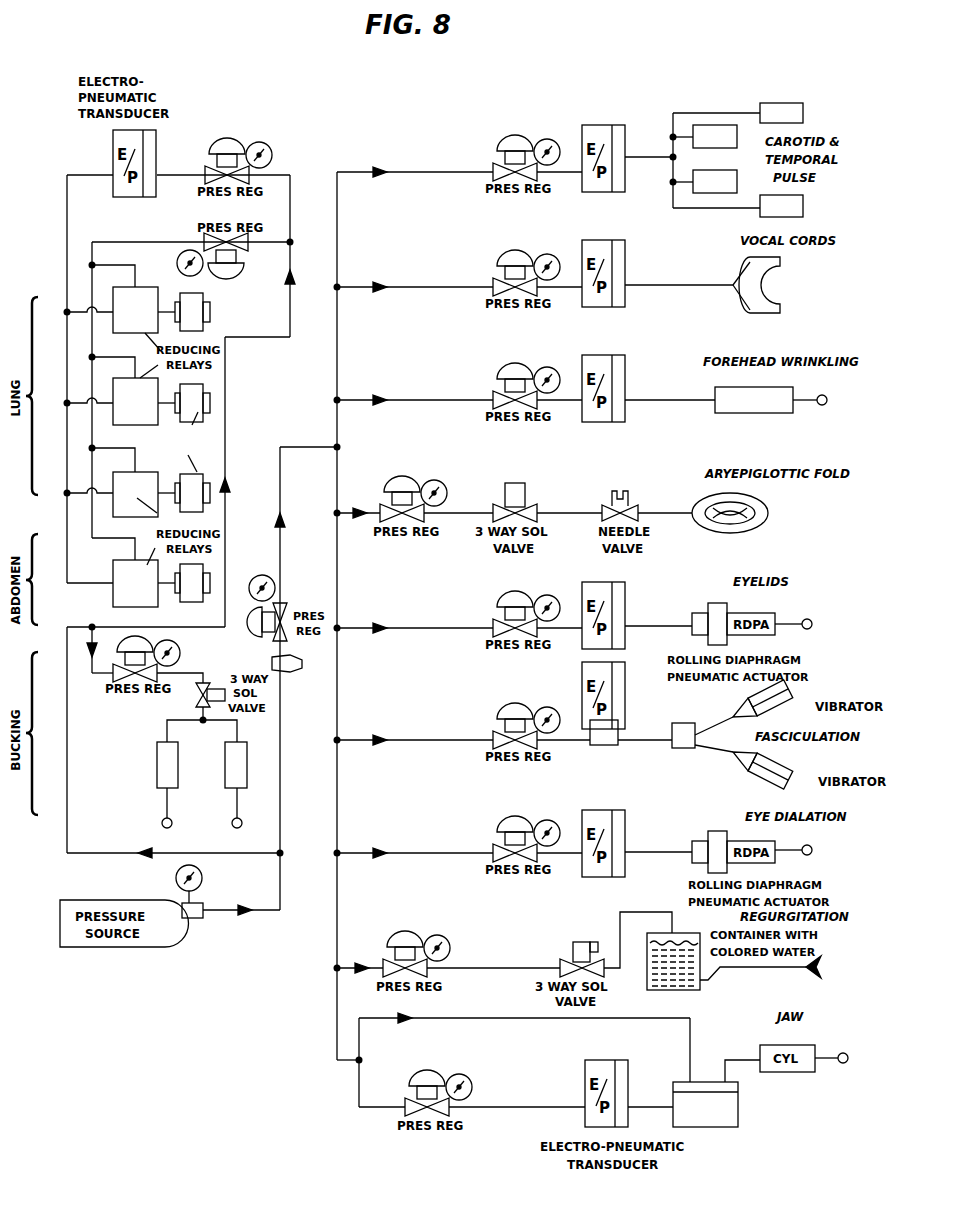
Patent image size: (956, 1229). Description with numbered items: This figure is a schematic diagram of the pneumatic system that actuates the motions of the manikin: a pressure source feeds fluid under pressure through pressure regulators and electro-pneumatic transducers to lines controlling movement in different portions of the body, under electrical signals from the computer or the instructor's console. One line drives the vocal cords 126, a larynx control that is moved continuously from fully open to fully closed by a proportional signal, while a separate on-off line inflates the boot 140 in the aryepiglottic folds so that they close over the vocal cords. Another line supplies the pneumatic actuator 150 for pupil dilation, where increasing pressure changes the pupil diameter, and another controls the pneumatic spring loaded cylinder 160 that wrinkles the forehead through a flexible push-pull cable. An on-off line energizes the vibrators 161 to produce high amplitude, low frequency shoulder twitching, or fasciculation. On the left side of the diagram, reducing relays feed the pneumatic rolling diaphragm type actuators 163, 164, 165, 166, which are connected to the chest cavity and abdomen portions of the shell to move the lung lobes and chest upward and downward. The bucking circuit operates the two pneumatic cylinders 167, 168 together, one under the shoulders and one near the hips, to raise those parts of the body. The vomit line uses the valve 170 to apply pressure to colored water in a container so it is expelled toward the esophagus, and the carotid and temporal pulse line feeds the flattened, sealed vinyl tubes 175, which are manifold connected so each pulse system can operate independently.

The vocal cords 126 is at (782, 305).
The inflatable boot 140 is at (766, 523).
The pneumatic actuator 150 is at (750, 840).
The pneumatic spring loaded cylinder 160 is at (775, 414).
The vibrators 161 is at (745, 703).
The pneumatic rolling diaphragm type actuator 163 is at (198, 312).
The pneumatic rolling diaphragm type actuator 164 is at (210, 403).
The pneumatic rolling diaphragm type actuator 165 is at (200, 497).
The pneumatic rolling diaphragm type actuator 166 is at (195, 580).
The pneumatic cylinder 167 is at (157, 768).
The pneumatic cylinder 168 is at (247, 768).
The valve 170 is at (575, 942).
The flattened, sealed vinyl tubes 175 is at (760, 106).